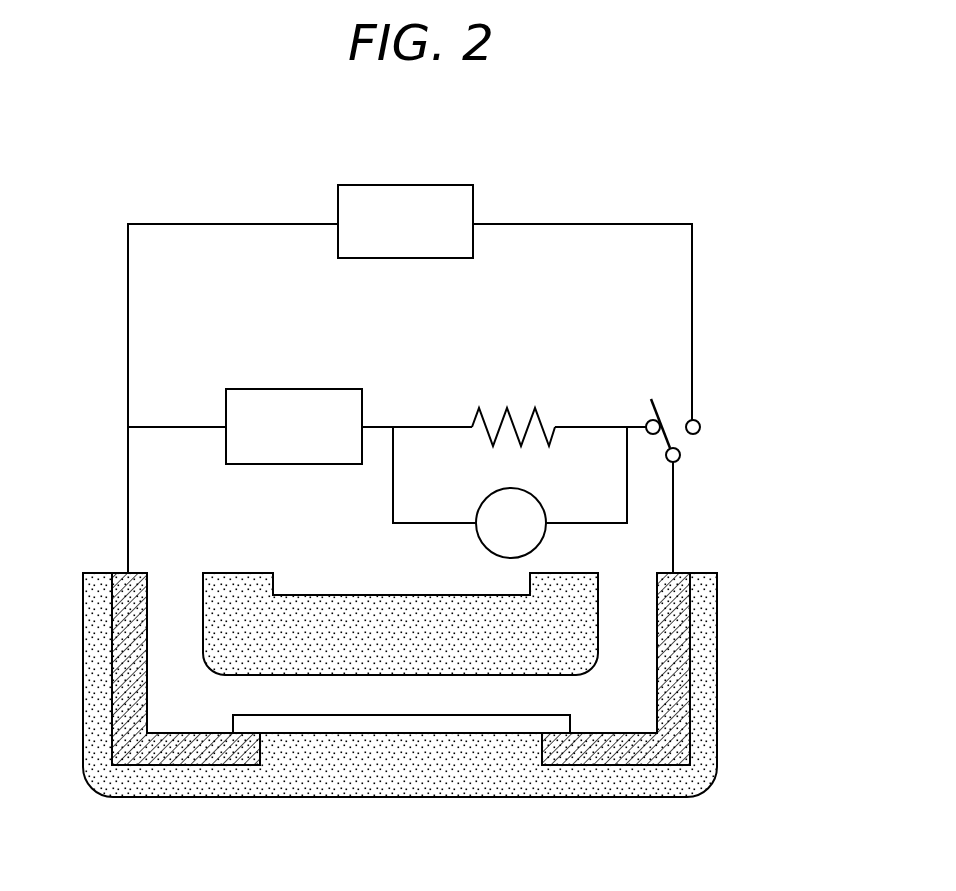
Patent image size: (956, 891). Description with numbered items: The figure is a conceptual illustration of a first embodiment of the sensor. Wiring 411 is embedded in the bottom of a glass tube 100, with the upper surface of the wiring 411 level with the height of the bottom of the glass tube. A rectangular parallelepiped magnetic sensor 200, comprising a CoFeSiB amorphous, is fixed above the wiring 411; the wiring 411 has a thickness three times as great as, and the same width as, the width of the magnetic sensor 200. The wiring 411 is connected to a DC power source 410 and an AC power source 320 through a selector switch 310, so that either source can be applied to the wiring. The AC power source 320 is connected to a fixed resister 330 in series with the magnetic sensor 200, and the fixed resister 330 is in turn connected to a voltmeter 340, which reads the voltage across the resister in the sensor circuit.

The glass tube 100 is at (717, 697).
The magnetic sensor 200 is at (436, 720).
The selector switch 310 is at (680, 452).
The AC power source 320 is at (298, 389).
The fixed resister 330 is at (500, 418).
The voltmeter 340 is at (540, 543).
The DC power source 410 is at (405, 185).
The wiring 411 is at (620, 762).